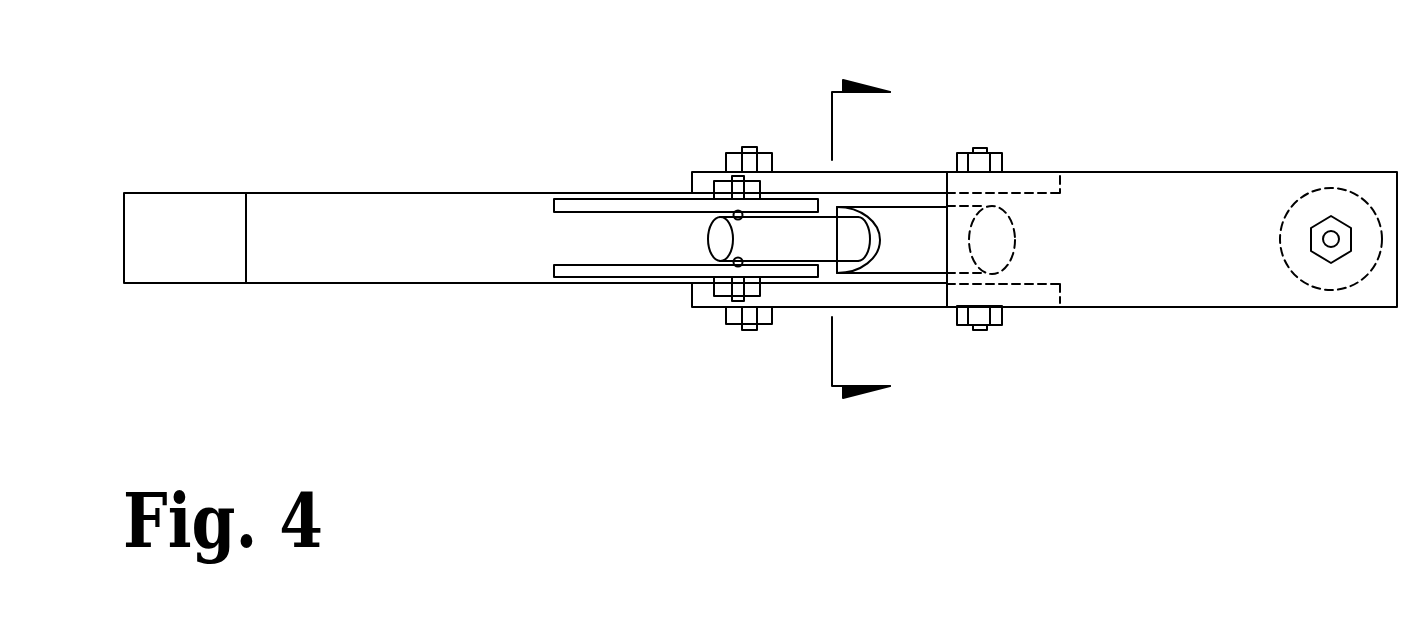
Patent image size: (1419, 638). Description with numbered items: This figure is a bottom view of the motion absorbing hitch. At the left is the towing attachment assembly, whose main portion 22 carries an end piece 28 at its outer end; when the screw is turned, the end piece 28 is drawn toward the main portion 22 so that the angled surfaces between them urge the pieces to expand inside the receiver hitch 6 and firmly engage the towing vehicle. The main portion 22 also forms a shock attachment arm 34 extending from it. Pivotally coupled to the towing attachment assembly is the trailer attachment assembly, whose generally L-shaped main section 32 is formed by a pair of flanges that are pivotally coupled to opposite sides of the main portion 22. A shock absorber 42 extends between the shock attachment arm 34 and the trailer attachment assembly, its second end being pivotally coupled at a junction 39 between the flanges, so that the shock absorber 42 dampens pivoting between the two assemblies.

The main portion 22 is at (323, 215).
The end piece 28 is at (168, 225).
The generally L-shaped main section 32 is at (807, 180).
The shock attachment arm 34 is at (638, 203).
The junction 39 is at (617, 270).
The shock absorber 42 is at (915, 230).
The receiver hitch 6 is at (876, 239).